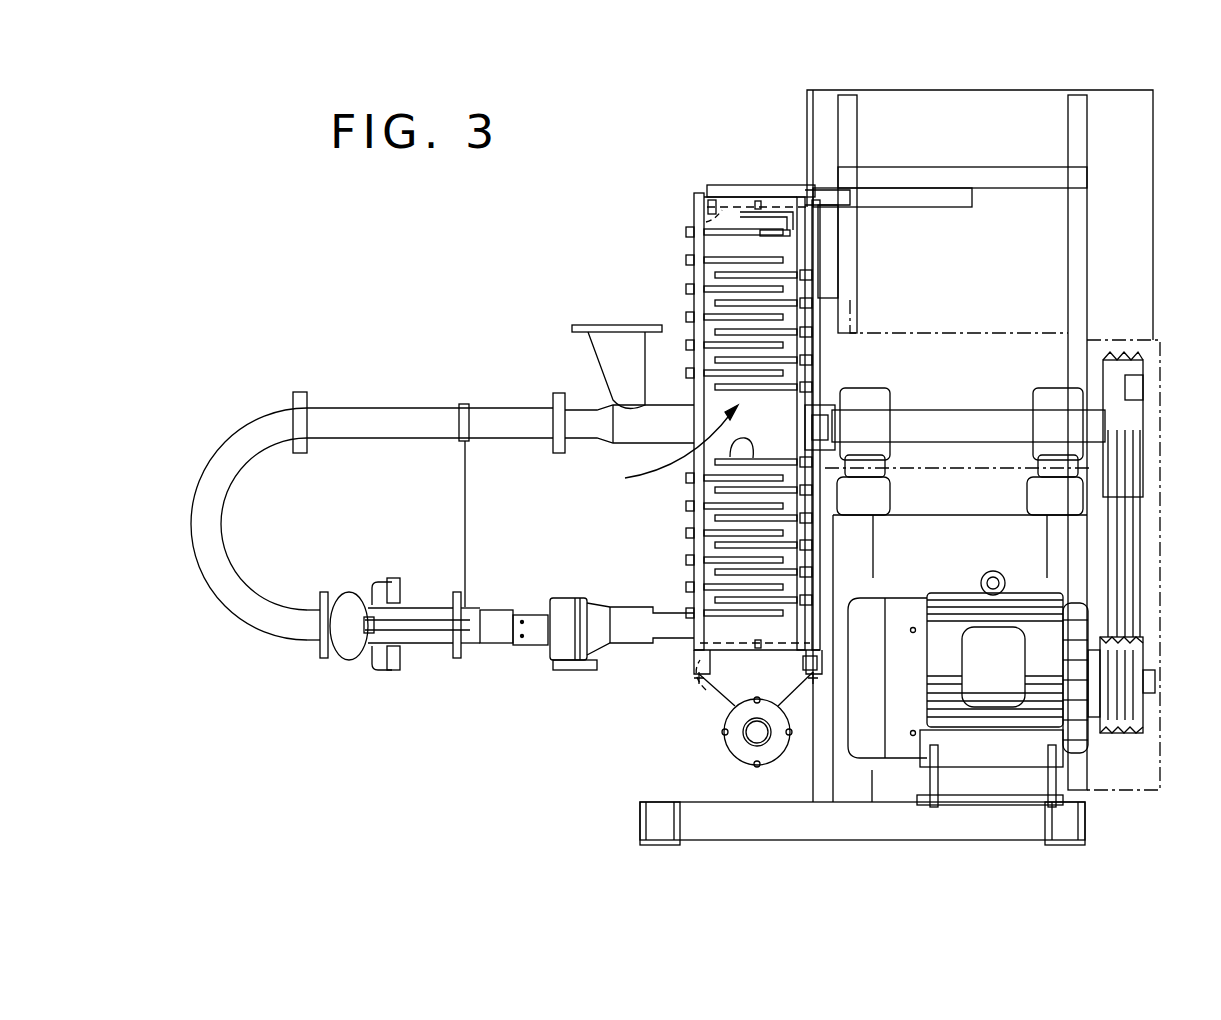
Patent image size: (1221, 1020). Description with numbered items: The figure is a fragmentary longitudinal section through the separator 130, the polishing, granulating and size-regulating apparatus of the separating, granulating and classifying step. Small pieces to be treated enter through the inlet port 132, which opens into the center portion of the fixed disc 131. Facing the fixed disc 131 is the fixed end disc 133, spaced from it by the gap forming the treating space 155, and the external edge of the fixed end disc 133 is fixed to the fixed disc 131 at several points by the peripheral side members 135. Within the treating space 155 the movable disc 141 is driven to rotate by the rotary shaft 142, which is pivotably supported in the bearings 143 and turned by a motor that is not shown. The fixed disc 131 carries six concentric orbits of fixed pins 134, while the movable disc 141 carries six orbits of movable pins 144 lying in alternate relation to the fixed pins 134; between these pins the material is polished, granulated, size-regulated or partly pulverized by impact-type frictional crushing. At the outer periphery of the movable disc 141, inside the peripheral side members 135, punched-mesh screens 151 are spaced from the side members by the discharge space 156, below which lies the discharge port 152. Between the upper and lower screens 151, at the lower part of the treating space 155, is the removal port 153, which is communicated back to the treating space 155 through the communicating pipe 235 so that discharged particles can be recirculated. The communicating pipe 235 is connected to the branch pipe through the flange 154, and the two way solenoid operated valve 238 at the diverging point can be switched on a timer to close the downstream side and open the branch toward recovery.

The separator 130 is at (675, 138).
The fixed disc 131 is at (697, 300).
The inlet port 132 is at (612, 360).
The fixed end disc 133 is at (818, 248).
The fixed pins 134 is at (725, 540).
The peripheral side members 135 is at (770, 185).
The movable disc 141 is at (820, 530).
The rotary shaft 142 is at (960, 420).
The bearings 143 is at (865, 405).
The movable pins 144 is at (745, 445).
The screens 151 is at (700, 210).
The discharge port 152 is at (750, 742).
The removal port 153 is at (690, 645).
The flange 154 is at (349, 662).
The treating space 155 is at (653, 450).
The discharge space 156 is at (744, 200).
The communicating pipe 235 is at (362, 420).
The two way solenoid operated valve 238 is at (535, 617).